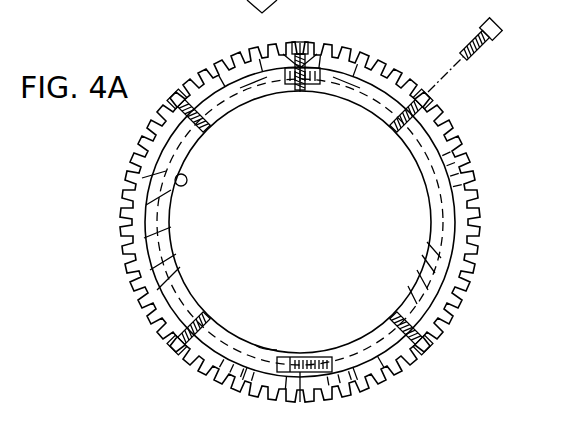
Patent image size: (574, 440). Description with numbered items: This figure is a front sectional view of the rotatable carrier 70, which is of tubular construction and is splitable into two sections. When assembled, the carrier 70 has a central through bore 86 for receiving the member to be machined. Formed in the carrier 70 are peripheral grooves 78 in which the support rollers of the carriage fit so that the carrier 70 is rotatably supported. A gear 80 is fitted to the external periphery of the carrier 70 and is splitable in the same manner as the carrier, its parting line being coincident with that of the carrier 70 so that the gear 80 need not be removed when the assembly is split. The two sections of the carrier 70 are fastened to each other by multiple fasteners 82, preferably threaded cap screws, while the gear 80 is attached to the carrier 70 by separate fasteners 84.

The carrier 70 is at (155, 236).
The peripheral grooves 78 is at (133, 272).
The gear 80 is at (458, 310).
The fasteners 82 is at (270, 86).
The fasteners 84 is at (177, 96).
The central through bore 86 is at (175, 179).